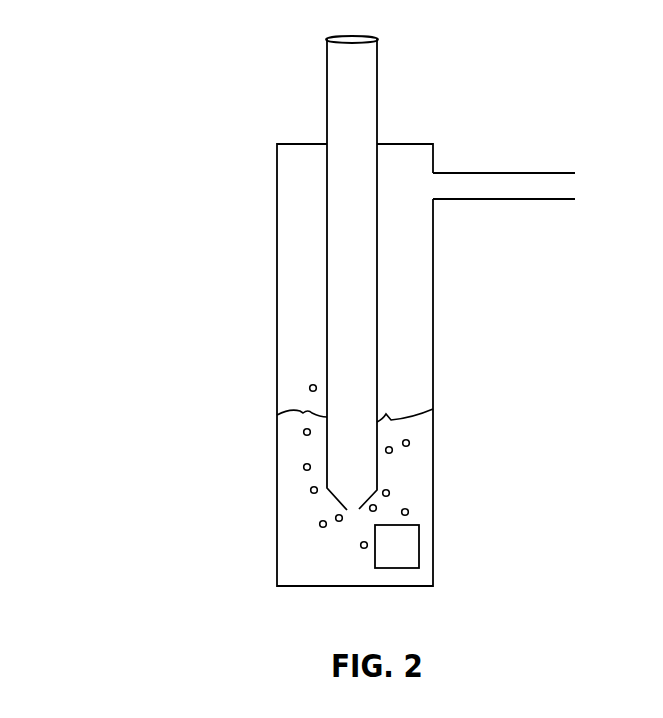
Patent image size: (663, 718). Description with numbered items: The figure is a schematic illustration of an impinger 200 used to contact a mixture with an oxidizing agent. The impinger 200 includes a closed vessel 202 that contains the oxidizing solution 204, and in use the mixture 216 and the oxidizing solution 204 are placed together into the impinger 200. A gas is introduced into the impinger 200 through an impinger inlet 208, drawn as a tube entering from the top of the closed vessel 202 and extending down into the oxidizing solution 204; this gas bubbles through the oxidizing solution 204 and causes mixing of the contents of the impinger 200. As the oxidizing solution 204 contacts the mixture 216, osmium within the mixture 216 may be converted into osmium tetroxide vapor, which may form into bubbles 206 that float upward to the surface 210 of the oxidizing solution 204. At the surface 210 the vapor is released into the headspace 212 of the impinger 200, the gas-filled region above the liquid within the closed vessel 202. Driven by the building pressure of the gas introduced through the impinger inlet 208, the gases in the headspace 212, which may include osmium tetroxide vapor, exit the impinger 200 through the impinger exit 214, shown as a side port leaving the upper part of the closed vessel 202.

The impinger 200 is at (146, 239).
The closed vessel 202 is at (277, 287).
The oxidizing solution 204 is at (295, 552).
The bubbles 206 is at (311, 489).
The impinger inlet 208 is at (378, 97).
The surface 210 is at (302, 412).
The headspace 212 is at (408, 337).
The impinger exit 214 is at (508, 173).
The mixture 216 is at (419, 544).